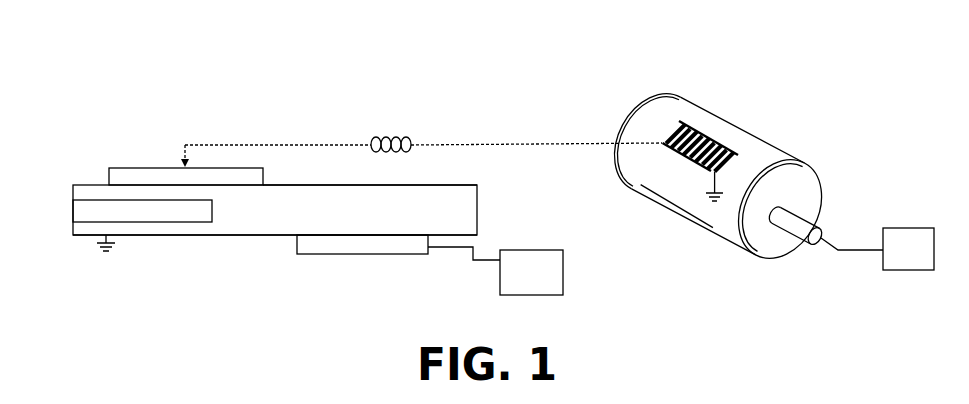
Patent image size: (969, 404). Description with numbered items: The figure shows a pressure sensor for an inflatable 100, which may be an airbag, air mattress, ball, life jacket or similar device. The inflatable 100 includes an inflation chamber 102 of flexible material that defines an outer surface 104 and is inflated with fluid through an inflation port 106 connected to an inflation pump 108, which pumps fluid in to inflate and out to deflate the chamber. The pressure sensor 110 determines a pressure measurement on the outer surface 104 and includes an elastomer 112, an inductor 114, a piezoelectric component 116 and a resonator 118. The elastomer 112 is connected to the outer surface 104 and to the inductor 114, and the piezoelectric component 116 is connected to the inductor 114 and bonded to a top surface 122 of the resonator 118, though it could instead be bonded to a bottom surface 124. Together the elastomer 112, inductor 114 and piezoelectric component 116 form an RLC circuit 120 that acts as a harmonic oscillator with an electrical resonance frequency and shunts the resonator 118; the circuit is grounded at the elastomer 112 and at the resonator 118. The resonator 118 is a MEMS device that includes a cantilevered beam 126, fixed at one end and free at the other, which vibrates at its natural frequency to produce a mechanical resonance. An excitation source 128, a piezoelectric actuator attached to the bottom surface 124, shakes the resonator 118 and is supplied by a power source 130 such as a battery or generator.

The inflatable 100 is at (648, 98).
The inflation chamber 102 is at (707, 107).
The outer surface 104 is at (752, 158).
The inflation port 106 is at (792, 225).
The inflation pump 108 is at (908, 270).
The pressure sensor 110 is at (105, 133).
The elastomer 112 is at (684, 156).
The inductor 114 is at (389, 137).
The piezoelectric component 116 is at (139, 168).
The resonator 118 is at (226, 228).
The RLC circuit 120 is at (489, 100).
The top surface 122 is at (313, 185).
The bottom surface 124 is at (276, 235).
The cantilevered beam 126 is at (158, 223).
The excitation source 128 is at (363, 254).
The power source 130 is at (563, 275).